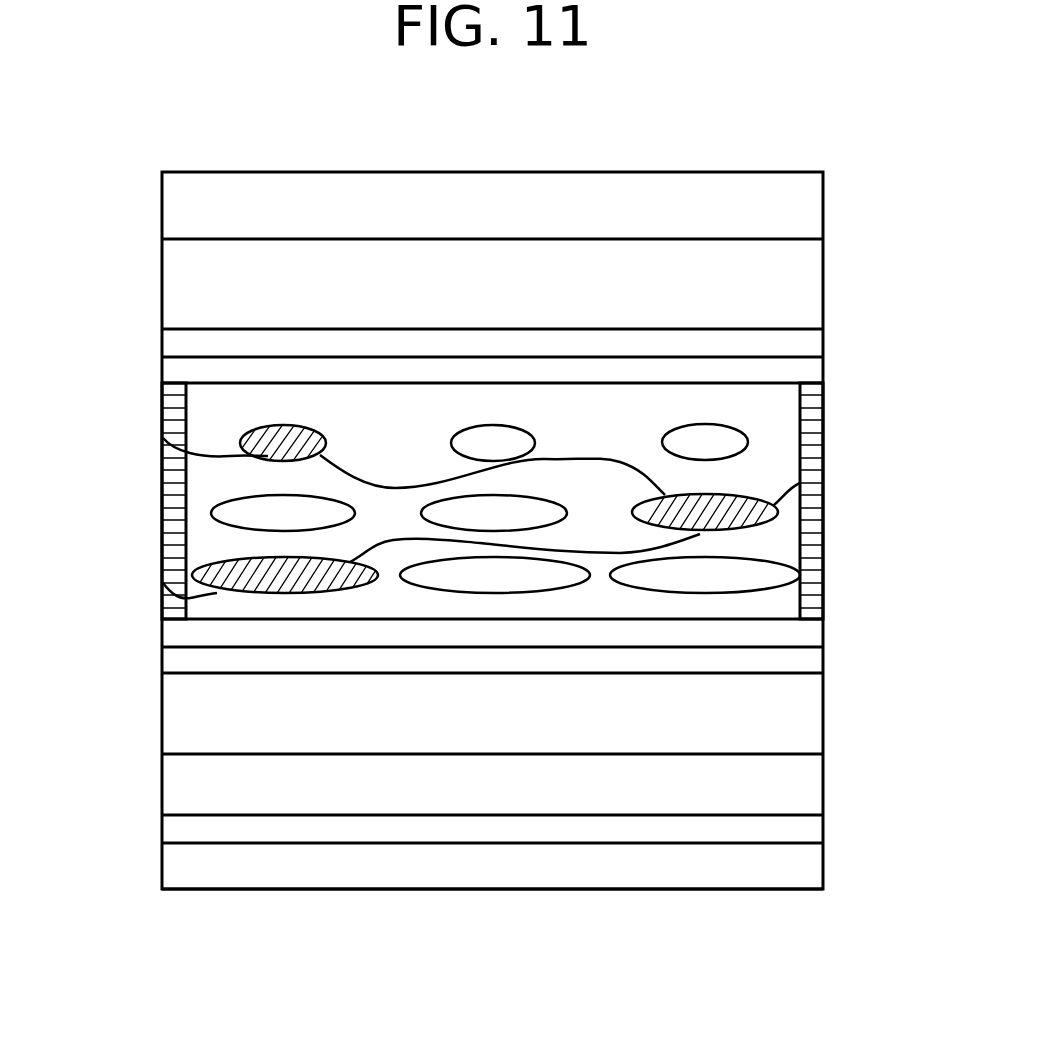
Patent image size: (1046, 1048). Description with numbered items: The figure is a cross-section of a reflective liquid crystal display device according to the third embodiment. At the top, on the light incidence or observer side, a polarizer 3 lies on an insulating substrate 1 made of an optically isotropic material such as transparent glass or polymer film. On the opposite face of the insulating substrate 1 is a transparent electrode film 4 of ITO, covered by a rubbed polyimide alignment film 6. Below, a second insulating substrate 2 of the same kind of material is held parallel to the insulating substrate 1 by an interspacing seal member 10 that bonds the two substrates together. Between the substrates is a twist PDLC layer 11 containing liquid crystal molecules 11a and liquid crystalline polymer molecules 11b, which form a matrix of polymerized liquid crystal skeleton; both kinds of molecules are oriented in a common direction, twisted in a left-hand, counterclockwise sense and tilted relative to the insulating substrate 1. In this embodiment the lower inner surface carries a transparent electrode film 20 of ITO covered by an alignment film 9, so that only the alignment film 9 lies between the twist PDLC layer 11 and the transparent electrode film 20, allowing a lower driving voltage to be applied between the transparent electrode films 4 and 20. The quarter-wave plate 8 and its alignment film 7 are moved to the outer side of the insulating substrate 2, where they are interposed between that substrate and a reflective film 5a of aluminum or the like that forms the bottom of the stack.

The polarizer 3 is at (815, 204).
The insulating substrate 1 is at (815, 277).
The transparent electrode film 4 is at (815, 338).
The alignment film 6 is at (815, 370).
The seal member 10 is at (815, 530).
The twist PDLC layer 11 is at (217, 475).
The liquid crystal molecules 11a is at (252, 433).
The polymer molecules 11b is at (227, 519).
The alignment film 9 is at (815, 636).
The transparent electrode film 20 is at (815, 665).
The insulating substrate 2 is at (815, 713).
The quarter-wave plate 8 is at (815, 781).
The alignment film 7 is at (815, 829).
The reflective film 5a is at (815, 871).